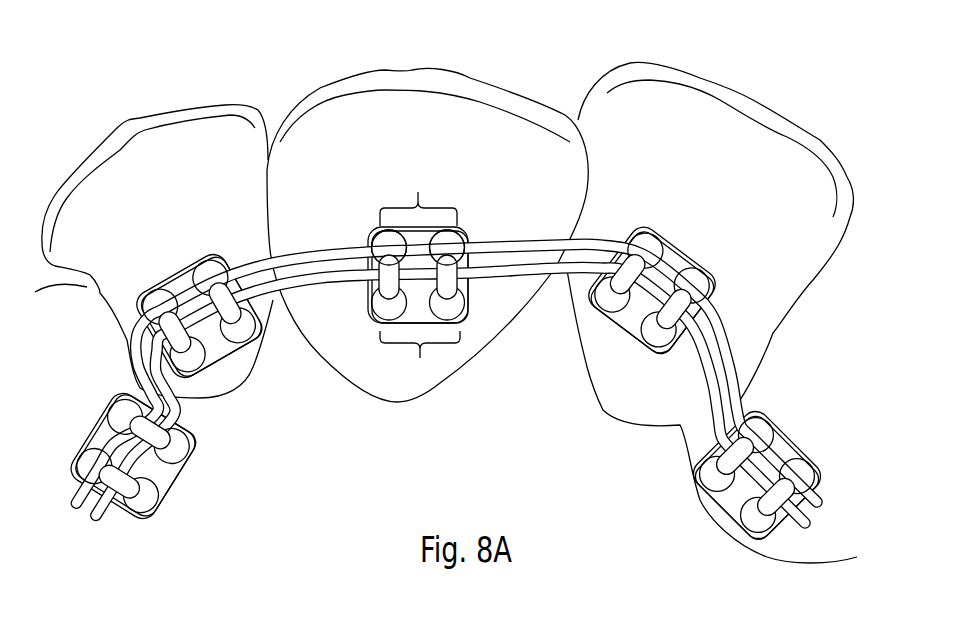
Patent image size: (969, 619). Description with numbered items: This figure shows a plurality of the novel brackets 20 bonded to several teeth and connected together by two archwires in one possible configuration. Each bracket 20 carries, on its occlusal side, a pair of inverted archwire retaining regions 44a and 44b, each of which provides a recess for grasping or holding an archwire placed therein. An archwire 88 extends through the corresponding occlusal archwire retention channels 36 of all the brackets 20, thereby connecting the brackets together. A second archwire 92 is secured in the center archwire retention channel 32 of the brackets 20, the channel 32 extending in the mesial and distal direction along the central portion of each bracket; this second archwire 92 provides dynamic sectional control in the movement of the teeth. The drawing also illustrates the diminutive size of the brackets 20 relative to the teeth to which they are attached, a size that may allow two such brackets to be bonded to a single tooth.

The bracket 20 is at (370, 327).
The archwire retention channel 32 is at (421, 367).
The occlusal archwire retention channel 36 is at (418, 184).
The inverted archwire retaining region 44a is at (452, 247).
The inverted archwire retaining region 44b is at (386, 244).
The archwire 88 is at (266, 257).
The second archwire 92 is at (312, 291).